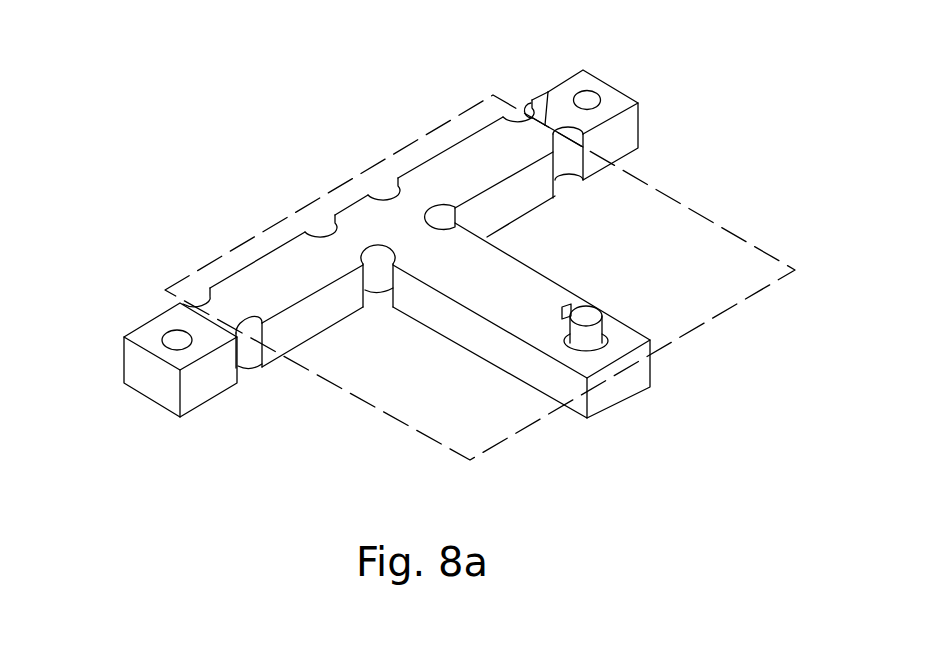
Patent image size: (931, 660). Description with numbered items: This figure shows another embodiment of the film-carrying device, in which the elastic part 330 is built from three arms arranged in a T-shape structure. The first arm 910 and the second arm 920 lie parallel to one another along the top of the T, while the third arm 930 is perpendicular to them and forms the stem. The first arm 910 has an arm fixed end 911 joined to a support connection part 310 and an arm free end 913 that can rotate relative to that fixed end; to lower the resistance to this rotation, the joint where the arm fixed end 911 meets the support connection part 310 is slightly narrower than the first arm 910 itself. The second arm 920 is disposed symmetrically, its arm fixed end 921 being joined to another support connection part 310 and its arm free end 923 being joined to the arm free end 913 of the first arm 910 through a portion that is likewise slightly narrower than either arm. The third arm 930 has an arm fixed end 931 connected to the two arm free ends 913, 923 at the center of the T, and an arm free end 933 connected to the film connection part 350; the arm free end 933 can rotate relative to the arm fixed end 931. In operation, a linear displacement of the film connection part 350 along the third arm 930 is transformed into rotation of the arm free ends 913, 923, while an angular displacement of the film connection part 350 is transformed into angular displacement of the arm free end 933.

The support connection part 310 is at (164, 334).
The elastic part 330 is at (690, 207).
The film connection part 350 is at (590, 333).
The first arm 910 is at (467, 165).
The arm fixed end 911 is at (548, 96).
The arm free end 913 is at (433, 180).
The second arm 920 is at (281, 262).
The arm fixed end 921 is at (222, 314).
The arm free end 923 is at (350, 238).
The third arm 930 is at (523, 287).
The arm fixed end 931 is at (410, 230).
The arm free end 933 is at (557, 331).